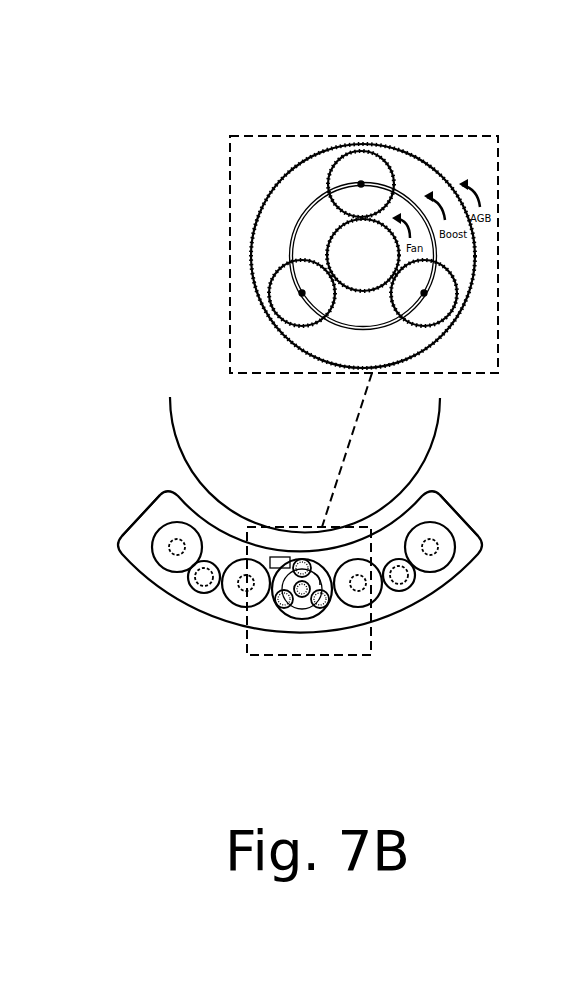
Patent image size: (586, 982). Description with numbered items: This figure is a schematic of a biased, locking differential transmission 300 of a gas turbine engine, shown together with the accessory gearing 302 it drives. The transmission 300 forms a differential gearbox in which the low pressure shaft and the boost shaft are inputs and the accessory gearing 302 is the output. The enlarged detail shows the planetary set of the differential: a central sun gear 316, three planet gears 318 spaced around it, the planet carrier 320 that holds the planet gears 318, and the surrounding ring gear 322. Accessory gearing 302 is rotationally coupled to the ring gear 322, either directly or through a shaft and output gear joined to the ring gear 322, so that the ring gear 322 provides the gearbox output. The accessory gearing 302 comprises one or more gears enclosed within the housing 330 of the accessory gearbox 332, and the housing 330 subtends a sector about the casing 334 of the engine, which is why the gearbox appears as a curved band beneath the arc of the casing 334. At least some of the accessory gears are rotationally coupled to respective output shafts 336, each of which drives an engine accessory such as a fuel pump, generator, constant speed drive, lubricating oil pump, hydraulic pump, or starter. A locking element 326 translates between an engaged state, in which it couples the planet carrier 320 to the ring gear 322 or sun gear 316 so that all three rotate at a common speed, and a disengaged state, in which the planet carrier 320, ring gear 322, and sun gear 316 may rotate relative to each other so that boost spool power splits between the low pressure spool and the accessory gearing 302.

The transmission 300 is at (326, 629).
The accessory gearing 302 is at (212, 602).
The sun gear 316 is at (335, 232).
The planet gears 318 is at (383, 156).
The planet carrier 320 is at (408, 197).
The ring gear 322 is at (318, 152).
The locking element 326 is at (275, 558).
The housing 330 is at (453, 530).
The accessory gearbox 332 is at (410, 629).
The casing 334 is at (442, 400).
The output shafts 336 is at (238, 578).